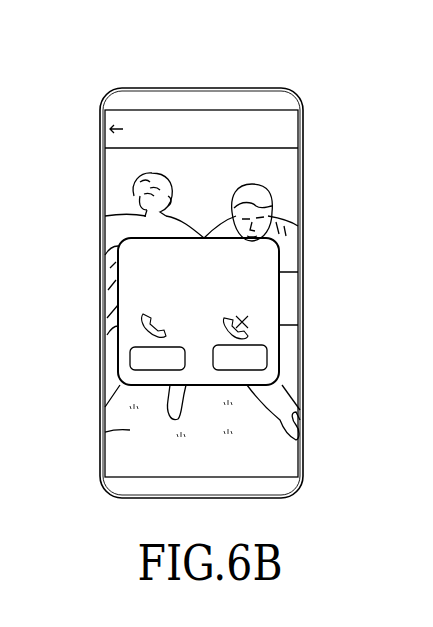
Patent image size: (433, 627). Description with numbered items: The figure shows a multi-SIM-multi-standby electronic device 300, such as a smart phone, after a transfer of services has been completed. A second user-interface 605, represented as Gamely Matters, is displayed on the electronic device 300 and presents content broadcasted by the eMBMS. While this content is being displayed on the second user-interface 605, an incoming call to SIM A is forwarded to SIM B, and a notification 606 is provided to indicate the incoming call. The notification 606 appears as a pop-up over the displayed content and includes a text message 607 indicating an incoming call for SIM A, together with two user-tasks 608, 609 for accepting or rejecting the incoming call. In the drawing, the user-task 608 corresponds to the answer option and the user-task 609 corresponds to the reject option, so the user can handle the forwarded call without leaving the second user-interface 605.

The electronic device 300 is at (200, 87).
The second user-interface 605 is at (243, 97).
The notification 606 is at (204, 309).
The text message 607 is at (127, 282).
The user-task 608 is at (118, 357).
The user-task 609 is at (282, 357).